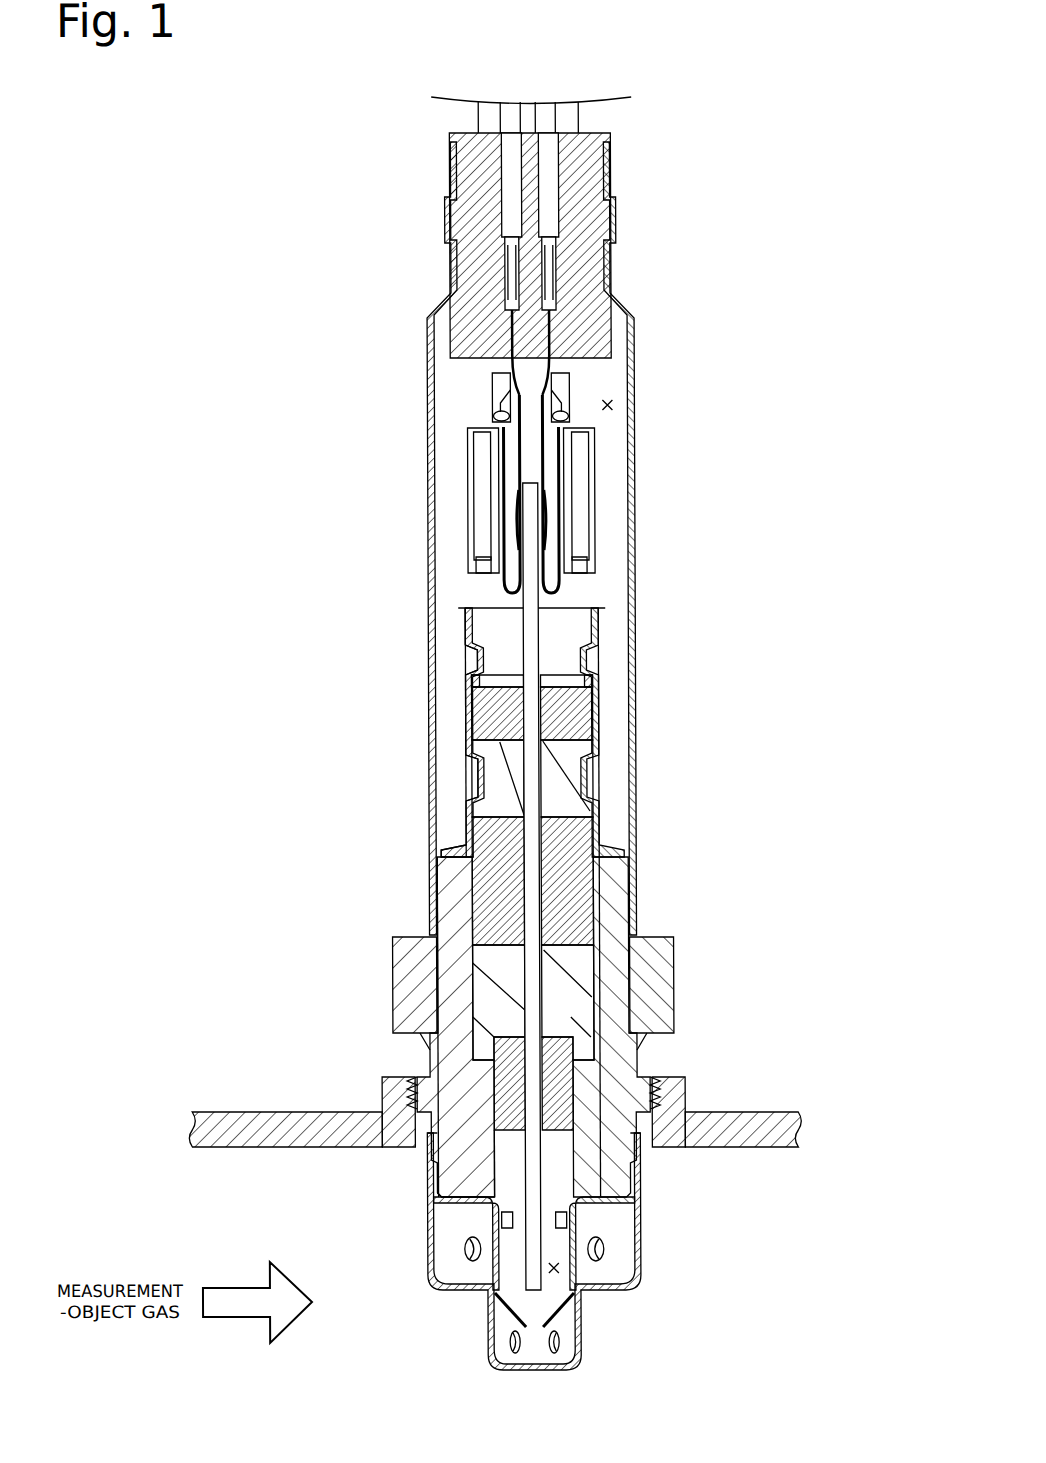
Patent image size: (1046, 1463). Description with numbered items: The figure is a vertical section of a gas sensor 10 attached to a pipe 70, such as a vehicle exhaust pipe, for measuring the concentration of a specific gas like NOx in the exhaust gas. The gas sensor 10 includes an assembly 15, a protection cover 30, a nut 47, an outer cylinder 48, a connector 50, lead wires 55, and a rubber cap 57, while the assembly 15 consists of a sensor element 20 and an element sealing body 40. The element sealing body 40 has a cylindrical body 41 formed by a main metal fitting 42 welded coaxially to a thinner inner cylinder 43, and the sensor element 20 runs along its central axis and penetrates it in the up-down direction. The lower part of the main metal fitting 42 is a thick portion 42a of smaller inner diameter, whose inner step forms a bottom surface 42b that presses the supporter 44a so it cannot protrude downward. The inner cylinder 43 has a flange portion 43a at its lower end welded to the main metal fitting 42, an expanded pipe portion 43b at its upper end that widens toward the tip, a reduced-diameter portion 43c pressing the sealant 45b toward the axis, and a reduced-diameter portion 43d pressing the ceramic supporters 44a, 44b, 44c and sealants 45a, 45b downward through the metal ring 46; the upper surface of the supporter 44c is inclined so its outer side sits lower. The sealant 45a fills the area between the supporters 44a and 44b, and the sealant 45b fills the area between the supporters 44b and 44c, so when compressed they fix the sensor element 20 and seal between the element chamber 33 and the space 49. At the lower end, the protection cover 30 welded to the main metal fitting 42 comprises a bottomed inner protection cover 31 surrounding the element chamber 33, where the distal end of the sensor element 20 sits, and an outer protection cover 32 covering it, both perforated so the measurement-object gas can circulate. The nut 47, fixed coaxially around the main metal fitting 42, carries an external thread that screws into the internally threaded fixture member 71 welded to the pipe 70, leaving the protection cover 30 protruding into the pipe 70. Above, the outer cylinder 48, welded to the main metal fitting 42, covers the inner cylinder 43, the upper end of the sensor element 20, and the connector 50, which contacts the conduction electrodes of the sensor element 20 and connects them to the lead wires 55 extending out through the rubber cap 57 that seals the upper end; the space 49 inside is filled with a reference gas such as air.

The gas sensor 10 is at (755, 181).
The assembly 15 is at (817, 823).
The sensor element 20 is at (532, 1097).
The protection cover 30 is at (620, 1251).
The inner protection cover 31 is at (575, 1228).
The outer protection cover 32 is at (640, 1242).
The element chamber 33 is at (555, 1268).
The element sealing body 40 is at (765, 683).
The cylindrical body 41 is at (705, 815).
The main metal fitting 42 is at (506, 1029).
The thick portion 42a is at (459, 1172).
The bottom surface 42b is at (501, 1130).
The inner cylinder 43 is at (527, 732).
The flange portion 43a is at (453, 852).
The expanded pipe portion 43b is at (465, 611).
The reduced-diameter portion 43c is at (471, 770).
The reduced-diameter portion 43d is at (476, 660).
The supporter 44a is at (565, 1072).
The supporter 44b is at (571, 923).
The supporter 44c is at (577, 720).
The sealant 45a is at (568, 997).
The sealant 45b is at (577, 790).
The metal ring 46 is at (589, 680).
The nut 47 is at (395, 958).
The outer cylinder 48 is at (633, 595).
The space 49 is at (612, 405).
The connector 50 is at (597, 557).
The lead wire 55 is at (513, 183).
The rubber cap 57 is at (588, 327).
The pipe 70 is at (269, 1125).
The fixture member 71 is at (387, 1092).